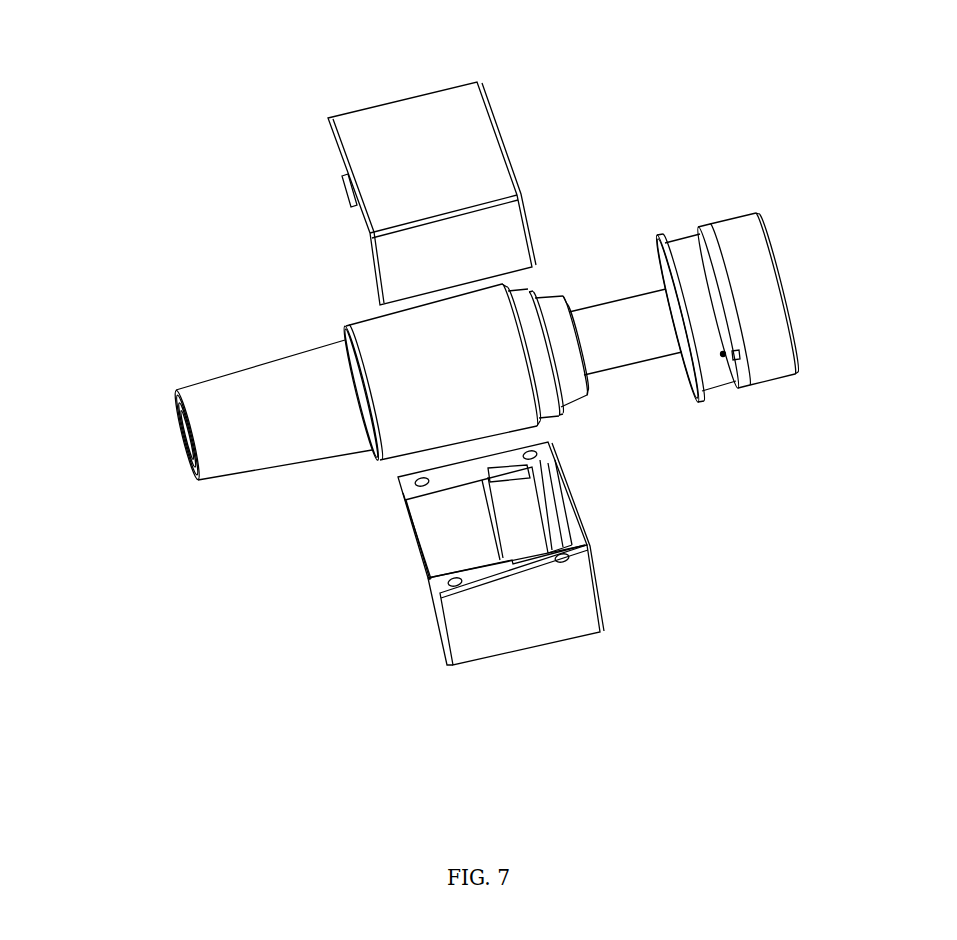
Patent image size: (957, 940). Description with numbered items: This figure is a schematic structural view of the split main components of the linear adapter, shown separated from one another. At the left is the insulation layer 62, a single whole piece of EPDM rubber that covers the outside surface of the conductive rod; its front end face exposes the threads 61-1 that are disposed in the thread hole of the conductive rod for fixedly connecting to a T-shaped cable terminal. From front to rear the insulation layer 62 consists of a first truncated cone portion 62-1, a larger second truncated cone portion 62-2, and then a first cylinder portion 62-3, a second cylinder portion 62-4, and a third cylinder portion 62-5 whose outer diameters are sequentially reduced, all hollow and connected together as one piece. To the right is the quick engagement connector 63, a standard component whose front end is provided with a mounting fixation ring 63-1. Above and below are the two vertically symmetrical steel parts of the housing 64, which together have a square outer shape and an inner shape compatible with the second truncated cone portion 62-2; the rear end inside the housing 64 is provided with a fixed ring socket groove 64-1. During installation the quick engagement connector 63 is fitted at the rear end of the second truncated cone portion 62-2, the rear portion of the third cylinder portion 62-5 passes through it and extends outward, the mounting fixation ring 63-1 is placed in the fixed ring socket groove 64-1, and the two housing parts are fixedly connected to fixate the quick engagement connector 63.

The threads 61-1 is at (172, 422).
The insulation layer 62 is at (245, 395).
The first truncated cone portion 62-1 is at (207, 378).
The second truncated cone portion 62-2 is at (383, 350).
The first cylinder portion 62-3 is at (534, 296).
The second cylinder portion 62-4 is at (558, 320).
The third cylinder portion 62-5 is at (602, 318).
The quick engagement connector 63 is at (738, 371).
The mounting fixation ring 63-1 is at (757, 353).
The housing 64 is at (365, 148).
The fixed ring socket groove 64-1 is at (558, 517).